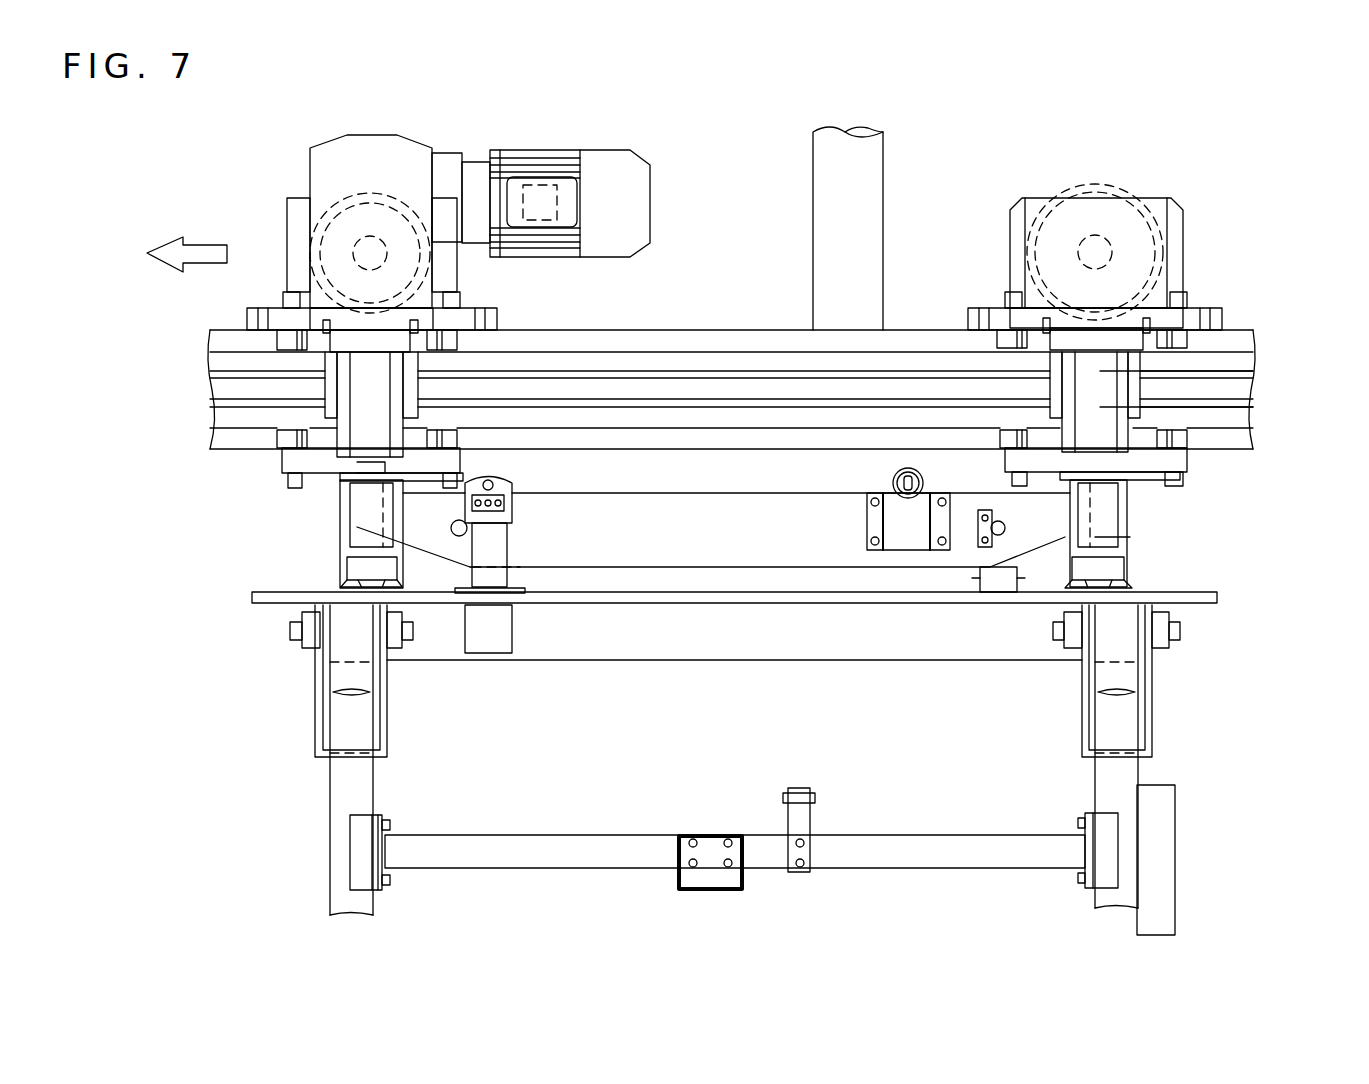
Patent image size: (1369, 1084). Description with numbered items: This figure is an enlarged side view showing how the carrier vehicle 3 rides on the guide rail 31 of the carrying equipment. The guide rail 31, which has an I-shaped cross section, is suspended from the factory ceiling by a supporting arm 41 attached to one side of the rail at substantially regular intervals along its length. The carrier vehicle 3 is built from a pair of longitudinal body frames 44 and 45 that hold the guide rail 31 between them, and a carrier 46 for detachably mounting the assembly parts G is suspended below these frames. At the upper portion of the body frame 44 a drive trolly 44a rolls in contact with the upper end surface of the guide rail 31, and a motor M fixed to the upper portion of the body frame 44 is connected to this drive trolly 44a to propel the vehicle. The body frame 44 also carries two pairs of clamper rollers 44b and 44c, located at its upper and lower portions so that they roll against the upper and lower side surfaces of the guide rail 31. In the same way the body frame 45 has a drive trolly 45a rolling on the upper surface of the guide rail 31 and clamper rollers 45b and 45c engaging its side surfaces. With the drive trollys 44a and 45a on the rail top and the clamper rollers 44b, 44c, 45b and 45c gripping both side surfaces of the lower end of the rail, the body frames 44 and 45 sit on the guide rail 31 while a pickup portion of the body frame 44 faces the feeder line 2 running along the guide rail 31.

The feeder line 2 is at (1240, 373).
The carrier vehicle 3 is at (1263, 543).
The guide rail 31 is at (727, 330).
The supporting arm 41 is at (880, 180).
The body frame 44 is at (463, 227).
The drive trolly 44a is at (332, 180).
The clamper rollers 44b is at (277, 345).
The clamper rollers 44c is at (283, 442).
The motor M is at (610, 148).
The body frame 45 is at (1127, 228).
The drive trolly 45a is at (1064, 178).
The clamper rollers 45b is at (968, 338).
The clamper rollers 45c is at (1003, 440).
The carrier 46 is at (1152, 725).
The assembly parts G is at (465, 865).